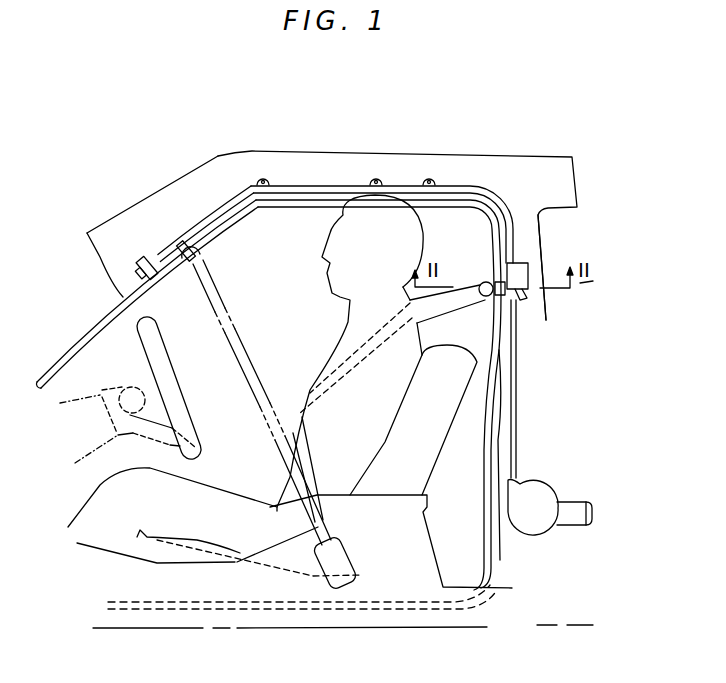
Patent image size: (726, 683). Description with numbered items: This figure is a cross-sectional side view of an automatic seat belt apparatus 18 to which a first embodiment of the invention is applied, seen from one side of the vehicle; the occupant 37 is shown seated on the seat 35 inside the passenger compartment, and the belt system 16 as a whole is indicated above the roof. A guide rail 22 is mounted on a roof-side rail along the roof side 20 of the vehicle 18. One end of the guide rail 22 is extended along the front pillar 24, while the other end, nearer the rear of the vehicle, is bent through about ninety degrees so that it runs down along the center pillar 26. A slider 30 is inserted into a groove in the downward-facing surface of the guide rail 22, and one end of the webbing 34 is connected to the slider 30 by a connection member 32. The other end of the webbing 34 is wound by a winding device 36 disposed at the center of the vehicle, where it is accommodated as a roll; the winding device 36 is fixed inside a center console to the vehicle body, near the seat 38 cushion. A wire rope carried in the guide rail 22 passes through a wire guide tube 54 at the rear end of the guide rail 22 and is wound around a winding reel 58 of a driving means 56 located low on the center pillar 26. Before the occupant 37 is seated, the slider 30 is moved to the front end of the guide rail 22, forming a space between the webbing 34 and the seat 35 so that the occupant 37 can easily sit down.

The passive seat belt system 16 is at (338, 182).
The automatic seat belt apparatus 18 is at (487, 150).
The roof side 20 is at (217, 180).
The guide rail 22 is at (353, 183).
The front pillar 24 is at (125, 223).
The center pillar 26 is at (533, 246).
The slider 30 is at (497, 278).
The connection member 32 is at (490, 302).
The webbing 34 is at (450, 292).
The seat 35 is at (460, 410).
The winding device 36 is at (352, 553).
The occupant 37 is at (337, 310).
The seat 38 is at (420, 538).
The wire guide tube 54 is at (518, 449).
The driving means 56 is at (563, 480).
The winding reel 58 is at (552, 537).